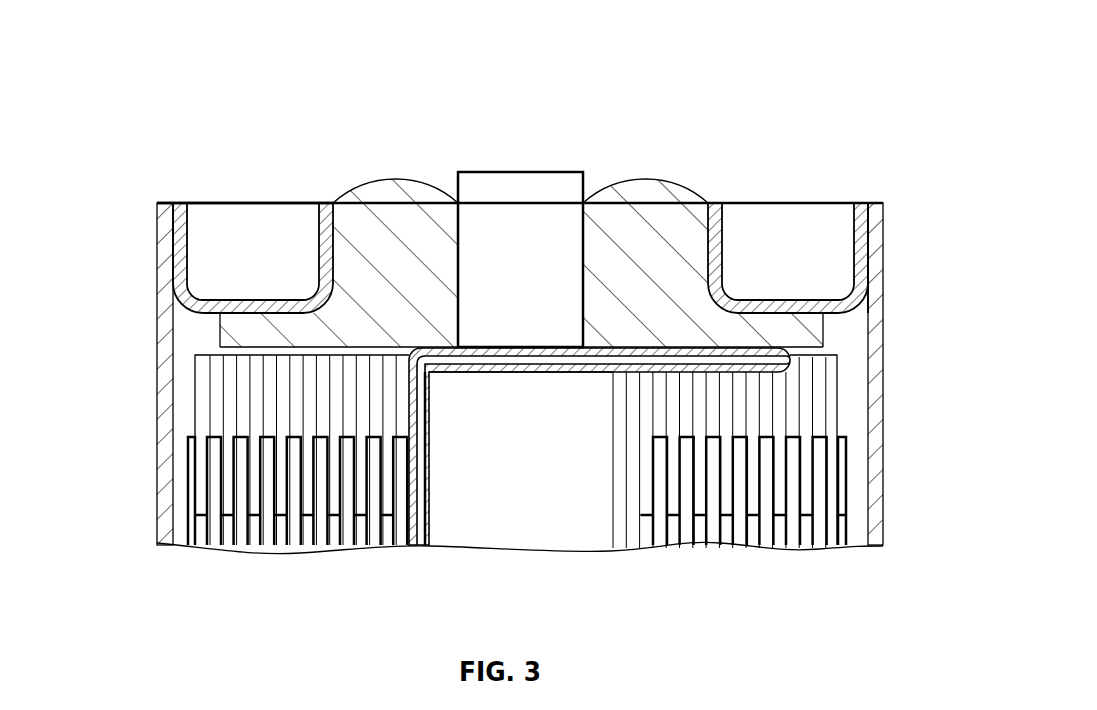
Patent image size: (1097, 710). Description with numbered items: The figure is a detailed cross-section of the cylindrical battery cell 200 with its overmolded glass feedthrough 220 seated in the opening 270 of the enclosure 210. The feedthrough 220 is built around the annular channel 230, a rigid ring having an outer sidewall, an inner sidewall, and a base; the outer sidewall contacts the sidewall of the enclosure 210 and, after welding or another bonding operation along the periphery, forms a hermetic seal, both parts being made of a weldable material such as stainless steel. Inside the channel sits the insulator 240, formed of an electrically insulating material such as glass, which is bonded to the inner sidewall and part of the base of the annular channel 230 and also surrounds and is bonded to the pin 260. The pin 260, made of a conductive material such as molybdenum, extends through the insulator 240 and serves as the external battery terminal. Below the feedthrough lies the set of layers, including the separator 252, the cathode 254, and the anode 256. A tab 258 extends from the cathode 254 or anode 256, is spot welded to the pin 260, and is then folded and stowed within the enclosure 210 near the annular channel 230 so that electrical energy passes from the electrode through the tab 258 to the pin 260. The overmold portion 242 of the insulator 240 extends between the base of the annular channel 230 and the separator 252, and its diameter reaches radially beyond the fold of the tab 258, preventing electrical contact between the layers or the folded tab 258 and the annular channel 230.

The cylindrical battery cell 200 is at (165, 45).
The enclosure 210 is at (885, 435).
The overmolded glass feedthrough 220 is at (186, 168).
The annular channel 230 is at (723, 272).
The insulator 240 is at (653, 268).
The overmold portion 242 is at (785, 327).
The separator 252 is at (197, 393).
The cathode 254 is at (188, 508).
The anode 256 is at (230, 528).
The tab 258 is at (530, 372).
The pin 260 is at (517, 171).
The opening 270 is at (867, 280).